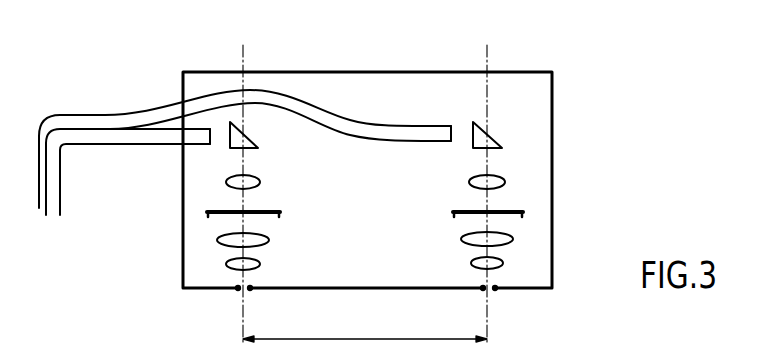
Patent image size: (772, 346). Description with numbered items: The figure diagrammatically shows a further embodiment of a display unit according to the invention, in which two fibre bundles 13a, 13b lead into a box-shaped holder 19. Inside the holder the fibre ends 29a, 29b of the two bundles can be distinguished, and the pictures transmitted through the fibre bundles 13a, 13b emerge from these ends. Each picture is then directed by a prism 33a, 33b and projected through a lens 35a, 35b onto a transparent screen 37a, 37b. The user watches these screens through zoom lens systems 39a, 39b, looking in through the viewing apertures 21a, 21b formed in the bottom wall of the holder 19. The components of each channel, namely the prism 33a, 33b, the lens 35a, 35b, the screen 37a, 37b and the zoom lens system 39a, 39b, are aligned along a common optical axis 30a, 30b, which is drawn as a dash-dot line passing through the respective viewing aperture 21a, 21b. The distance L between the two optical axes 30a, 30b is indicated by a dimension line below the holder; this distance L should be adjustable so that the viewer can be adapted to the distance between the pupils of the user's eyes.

The fibre bundle 13a is at (128, 133).
The fibre bundle 13b is at (129, 118).
The box-shaped holder 19 is at (525, 87).
The viewing aperture 21a is at (238, 294).
The viewing aperture 21b is at (495, 293).
The fibre end 29a is at (211, 147).
The fibre end 29b is at (441, 128).
The optical axis 30a is at (245, 56).
The optical axis 30b is at (483, 55).
The prism 33a is at (251, 140).
The prism 33b is at (496, 140).
The lens 35a is at (252, 180).
The lens 35b is at (470, 185).
The transparent screen 37a is at (281, 209).
The transparent screen 37b is at (455, 210).
The zoom lens system 39a is at (258, 253).
The zoom lens system 39b is at (470, 253).
The distance between optical axes L is at (365, 336).